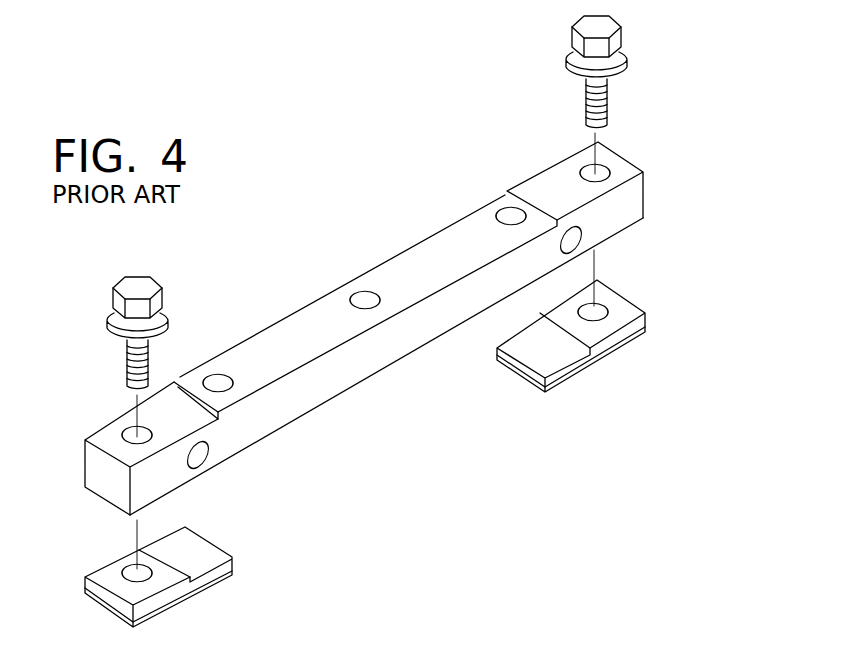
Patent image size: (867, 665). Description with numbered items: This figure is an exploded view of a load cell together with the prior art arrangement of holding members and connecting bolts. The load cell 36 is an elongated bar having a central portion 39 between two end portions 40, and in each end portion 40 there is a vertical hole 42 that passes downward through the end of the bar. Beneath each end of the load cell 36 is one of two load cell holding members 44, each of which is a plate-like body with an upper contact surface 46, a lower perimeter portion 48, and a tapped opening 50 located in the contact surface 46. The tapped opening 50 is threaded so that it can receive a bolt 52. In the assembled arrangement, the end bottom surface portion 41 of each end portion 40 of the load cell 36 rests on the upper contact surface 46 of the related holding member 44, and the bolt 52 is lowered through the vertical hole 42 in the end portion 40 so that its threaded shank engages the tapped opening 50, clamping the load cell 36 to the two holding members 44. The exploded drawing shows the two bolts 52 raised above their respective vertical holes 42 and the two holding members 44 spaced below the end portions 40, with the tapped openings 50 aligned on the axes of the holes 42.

The load cell 36 is at (318, 317).
The central portion 39 is at (392, 335).
The end portion 40 is at (105, 440).
The end bottom surface portion 41 is at (153, 505).
The vertical hole 42 is at (130, 433).
The load cell holding member 44 is at (200, 608).
The upper contact surface 46 is at (107, 577).
The lower perimeter portion 48 is at (213, 582).
The tapped opening 50 is at (130, 568).
The bolt 52 is at (133, 295).